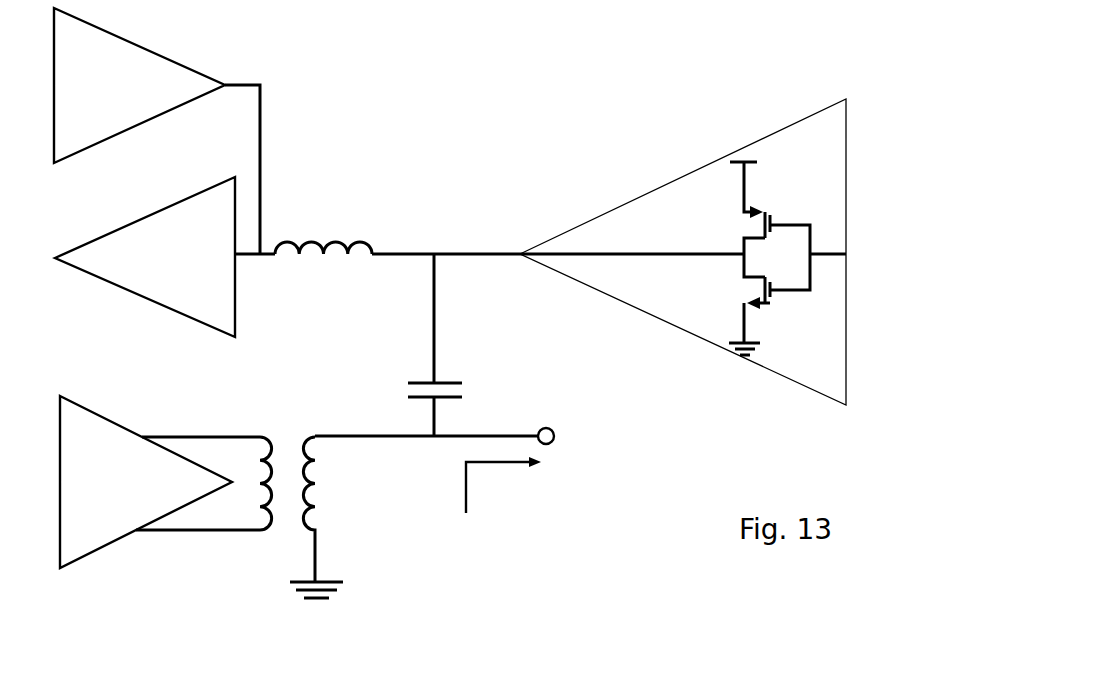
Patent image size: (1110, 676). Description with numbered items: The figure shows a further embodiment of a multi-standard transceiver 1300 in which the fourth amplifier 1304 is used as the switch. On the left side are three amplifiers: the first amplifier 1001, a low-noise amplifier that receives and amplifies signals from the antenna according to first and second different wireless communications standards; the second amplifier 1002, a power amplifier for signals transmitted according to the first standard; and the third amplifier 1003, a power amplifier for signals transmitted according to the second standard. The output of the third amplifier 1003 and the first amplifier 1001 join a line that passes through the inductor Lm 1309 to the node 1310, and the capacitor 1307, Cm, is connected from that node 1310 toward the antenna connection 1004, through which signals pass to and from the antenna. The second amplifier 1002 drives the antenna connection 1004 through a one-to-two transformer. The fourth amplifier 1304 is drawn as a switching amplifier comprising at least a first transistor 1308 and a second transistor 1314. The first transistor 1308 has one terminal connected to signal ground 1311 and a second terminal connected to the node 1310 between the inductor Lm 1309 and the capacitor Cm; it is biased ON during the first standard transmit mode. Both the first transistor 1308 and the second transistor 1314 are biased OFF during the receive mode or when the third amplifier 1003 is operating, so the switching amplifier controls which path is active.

The transceiver 1300 is at (372, 65).
The third amplifier 1003 is at (197, 78).
The first amplifier 1001 is at (162, 277).
The second amplifier 1002 is at (110, 522).
The inductor Lm 1309 is at (343, 258).
The node 1310 is at (432, 242).
The capacitor 1307 is at (468, 378).
The antenna connection 1004 is at (550, 428).
The fourth amplifier 1304 is at (647, 197).
The second transistor 1314 is at (763, 210).
The first transistor 1308 is at (743, 278).
The signal ground 1311 is at (744, 352).